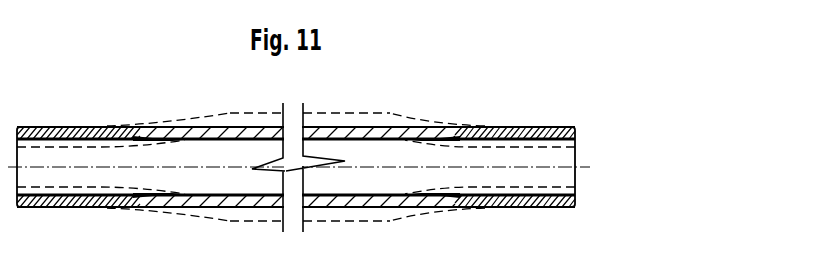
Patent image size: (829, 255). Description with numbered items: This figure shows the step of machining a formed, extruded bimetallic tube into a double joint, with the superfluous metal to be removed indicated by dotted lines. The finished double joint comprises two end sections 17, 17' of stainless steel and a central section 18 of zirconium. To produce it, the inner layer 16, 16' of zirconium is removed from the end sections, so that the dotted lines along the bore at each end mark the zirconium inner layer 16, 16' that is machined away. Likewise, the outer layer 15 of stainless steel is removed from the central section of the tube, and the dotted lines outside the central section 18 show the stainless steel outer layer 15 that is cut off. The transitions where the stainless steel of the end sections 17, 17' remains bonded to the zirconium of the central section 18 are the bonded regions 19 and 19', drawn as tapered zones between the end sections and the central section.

The outer layer 15 is at (365, 123).
The inner layer 16 is at (490, 140).
The inner layer 16' is at (101, 140).
The end section 17 is at (515, 142).
The end section 17' is at (78, 144).
The central section 18 is at (217, 128).
The bonded region 19 is at (437, 149).
The bonded region 19' is at (168, 152).